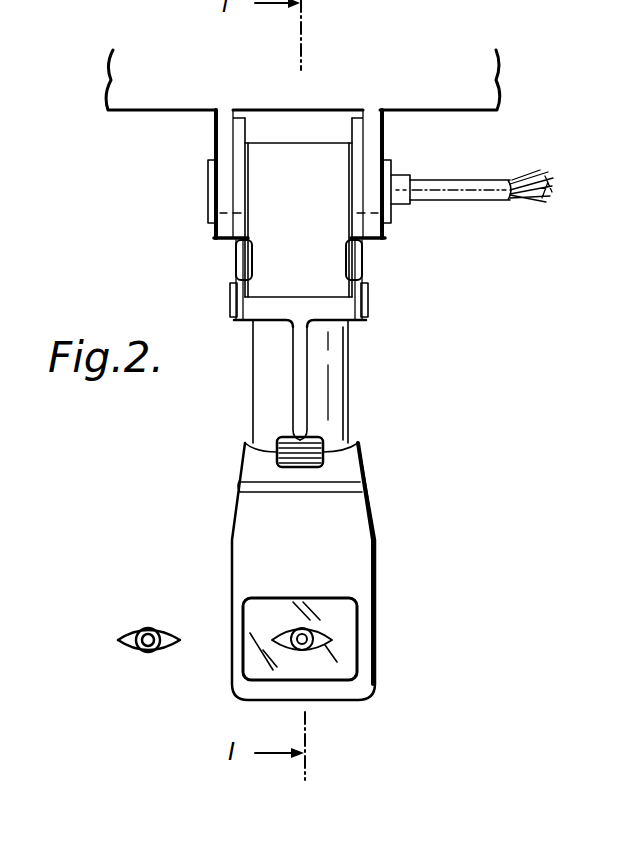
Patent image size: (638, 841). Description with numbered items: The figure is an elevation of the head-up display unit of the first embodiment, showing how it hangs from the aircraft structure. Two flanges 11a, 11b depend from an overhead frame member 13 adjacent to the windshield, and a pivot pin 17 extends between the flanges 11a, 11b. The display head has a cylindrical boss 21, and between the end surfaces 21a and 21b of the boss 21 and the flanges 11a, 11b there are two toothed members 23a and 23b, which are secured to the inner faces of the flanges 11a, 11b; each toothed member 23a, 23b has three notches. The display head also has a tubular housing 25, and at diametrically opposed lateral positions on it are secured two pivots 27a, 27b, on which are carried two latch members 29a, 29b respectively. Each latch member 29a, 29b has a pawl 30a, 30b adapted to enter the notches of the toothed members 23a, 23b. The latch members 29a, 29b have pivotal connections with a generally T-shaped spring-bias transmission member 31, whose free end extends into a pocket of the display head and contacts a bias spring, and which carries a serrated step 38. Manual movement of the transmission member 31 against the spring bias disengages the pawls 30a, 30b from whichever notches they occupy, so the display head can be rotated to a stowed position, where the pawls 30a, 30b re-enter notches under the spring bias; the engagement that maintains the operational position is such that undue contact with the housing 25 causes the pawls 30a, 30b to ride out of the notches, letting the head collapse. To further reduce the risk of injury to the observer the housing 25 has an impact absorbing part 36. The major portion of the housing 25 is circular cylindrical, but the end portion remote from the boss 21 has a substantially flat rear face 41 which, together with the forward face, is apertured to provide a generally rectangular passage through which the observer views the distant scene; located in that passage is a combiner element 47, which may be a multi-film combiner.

The overhead frame member 13 is at (128, 70).
The end surface of the boss 21a is at (247, 150).
The cylindrical boss 21 is at (302, 150).
The toothed member 23b is at (358, 127).
The toothed member 23a is at (240, 137).
The end surface of the boss 21b is at (352, 160).
The pivot pin 17 is at (205, 178).
The flange 11a is at (218, 233).
The flange 11b is at (380, 233).
The pawl 30a is at (236, 246).
The pawl 30b is at (362, 247).
The latch member 29a is at (233, 272).
The latch member 29b is at (363, 272).
The pivot 27a is at (230, 310).
The pivot 27b is at (363, 320).
The spring-bias transmission member 31 is at (280, 378).
The tubular housing 25 is at (372, 412).
The serrated step 38 is at (337, 462).
The impact absorbing part 36 is at (343, 555).
The rear face 41 is at (375, 633).
The combiner element 47 is at (330, 660).